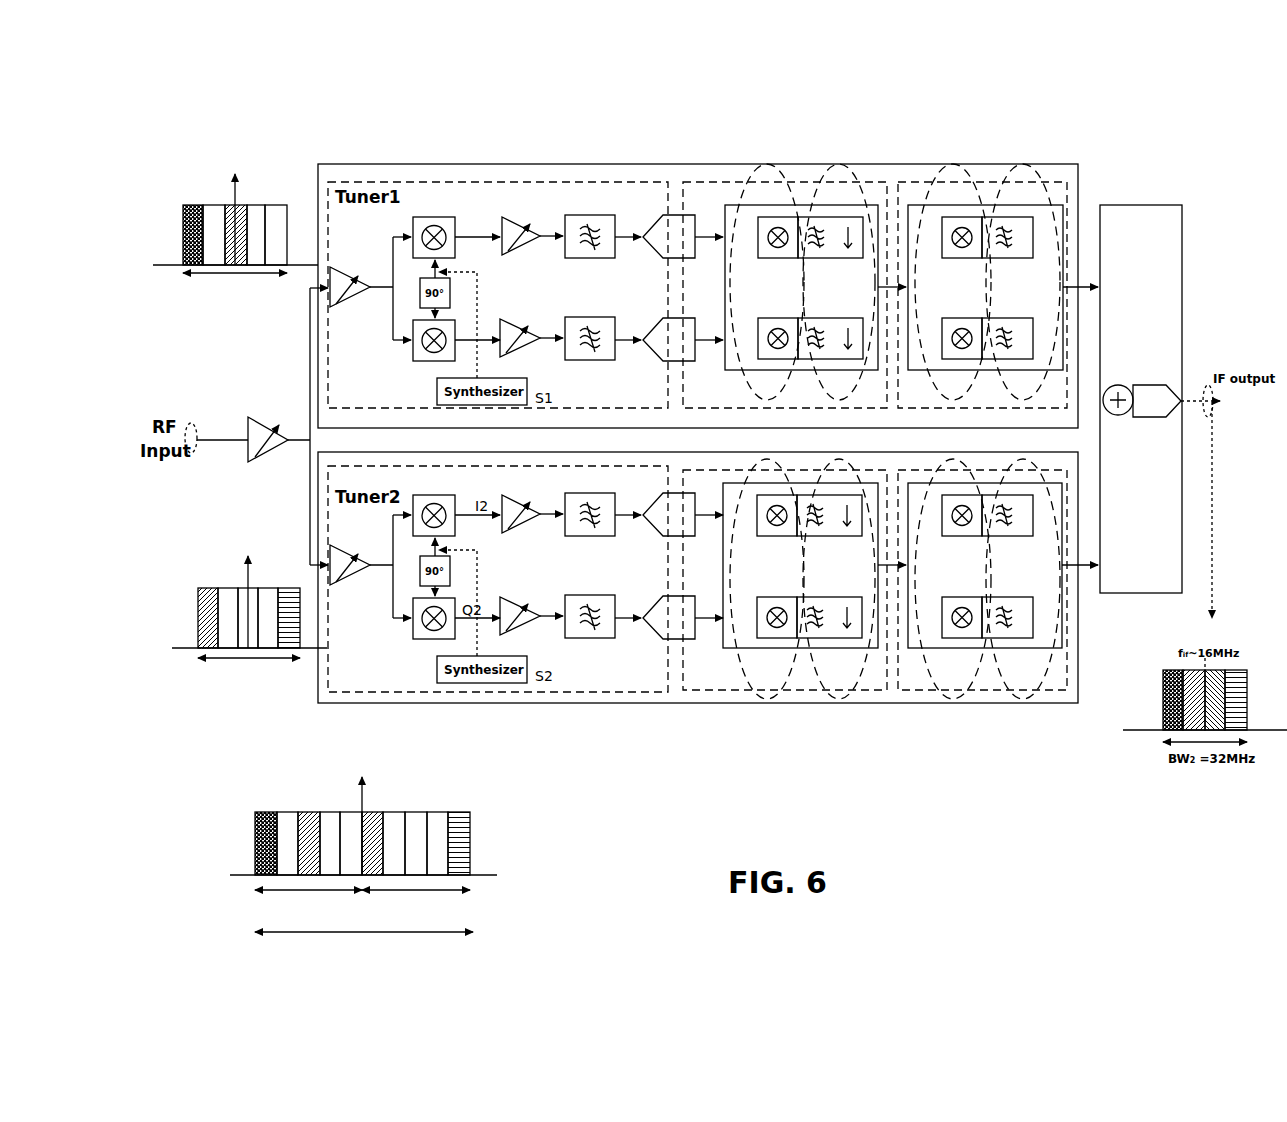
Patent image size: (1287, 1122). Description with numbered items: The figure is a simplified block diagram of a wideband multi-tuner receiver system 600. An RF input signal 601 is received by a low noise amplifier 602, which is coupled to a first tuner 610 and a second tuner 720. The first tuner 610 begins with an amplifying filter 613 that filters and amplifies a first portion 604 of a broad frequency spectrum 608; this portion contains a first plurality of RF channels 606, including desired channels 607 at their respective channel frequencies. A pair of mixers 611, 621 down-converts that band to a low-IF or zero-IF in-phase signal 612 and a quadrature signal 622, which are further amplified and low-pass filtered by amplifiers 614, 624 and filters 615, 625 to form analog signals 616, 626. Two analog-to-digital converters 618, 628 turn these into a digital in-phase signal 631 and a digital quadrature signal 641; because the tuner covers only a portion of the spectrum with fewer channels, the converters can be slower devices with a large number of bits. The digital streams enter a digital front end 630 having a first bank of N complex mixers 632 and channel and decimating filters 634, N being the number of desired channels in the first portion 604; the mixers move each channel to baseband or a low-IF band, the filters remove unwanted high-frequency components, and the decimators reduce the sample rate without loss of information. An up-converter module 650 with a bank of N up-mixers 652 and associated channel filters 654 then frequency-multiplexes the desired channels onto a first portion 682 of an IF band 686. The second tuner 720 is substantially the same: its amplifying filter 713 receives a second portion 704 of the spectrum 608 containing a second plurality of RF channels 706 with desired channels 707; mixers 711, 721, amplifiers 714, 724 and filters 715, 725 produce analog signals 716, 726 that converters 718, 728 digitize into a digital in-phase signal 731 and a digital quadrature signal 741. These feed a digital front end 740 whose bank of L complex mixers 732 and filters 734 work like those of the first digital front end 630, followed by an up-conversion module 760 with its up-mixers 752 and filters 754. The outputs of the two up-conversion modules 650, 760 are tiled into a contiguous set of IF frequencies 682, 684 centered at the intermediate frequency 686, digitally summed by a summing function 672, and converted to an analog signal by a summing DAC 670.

The wideband multi-tuner receiver system 600 is at (887, 124).
The RF input signal 601 is at (216, 436).
The low noise amplifier A1 602 is at (270, 420).
The first portion BWtuner1 of the broad frequency spectrum 604 is at (228, 312).
The first plurality of RF channels 606 is at (230, 233).
The desired channels 607 is at (183, 210).
The broad frequency spectrum 608 is at (418, 774).
The tuner1 610 is at (493, 193).
The mixer M1 611 is at (445, 227).
The in-phase signal I1 612 is at (477, 240).
The amplifying filter AF1 613 is at (343, 297).
The variable gain amplifier V1 614 is at (526, 243).
The filter F1 615 is at (590, 238).
The analog signal Ia1 616 is at (634, 240).
The analog-to-digital converter ADC1 618 is at (669, 226).
The mixer M2 621 is at (446, 351).
The quadrature signal Q1 622 is at (477, 341).
The variable gain amplifier V2 624 is at (526, 343).
The filter F2 625 is at (590, 340).
The analog signal Qa1 626 is at (634, 342).
The analog-to-digital converter ADC2 628 is at (669, 329).
The digital front end DFE 630 is at (789, 255).
The digital in-phase signal Id1 631 is at (709, 240).
The first bank of N complex mixers 632 is at (750, 217).
The channel and decimating filters 634 is at (805, 222).
The digital quadrature signal Qd1 641 is at (711, 342).
The up-converter module 650 is at (989, 262).
The complex up-mixer 652 is at (962, 222).
The channel filter 654 is at (1023, 230).
The summing DAC 670 is at (1141, 376).
The digital summing function 672 is at (1112, 383).
The first portion of the IF band 682 is at (1183, 685).
The second set of IF frequencies 684 is at (1243, 682).
The IF band centered at fif 686 is at (1234, 510).
The second portion BWtuner2 of the broad frequency spectrum 704 is at (249, 677).
The second plurality of RF channels 706 is at (233, 602).
The desired channels 707 is at (208, 602).
The mixer M3 711 is at (445, 505).
The amplifying filter AF2 713 is at (345, 577).
The amplifier V3 714 is at (526, 521).
The filter F3 715 is at (590, 516).
The filtered in-phase signal Ia2 716 is at (634, 518).
The analog to digital converter ADC3 718 is at (669, 504).
The tuner2 720 is at (585, 703).
The mixer M4 721 is at (446, 629).
The amplifier V4 724 is at (526, 621).
The filter F4 725 is at (590, 618).
The filtered quadrature signal Qa2 726 is at (634, 620).
The analog to digital converter ADC4 728 is at (669, 607).
The digital in-phase signal Id2 731 is at (709, 518).
The complex mixer 732 is at (777, 638).
The channel filter and decimator 734 is at (842, 638).
The digital front end 740 is at (792, 614).
The digital quadrature signal Qd2 741 is at (711, 620).
The complex up-mixer 752 is at (965, 638).
The channel filter 754 is at (1005, 638).
The up-conversion module 760 is at (985, 614).